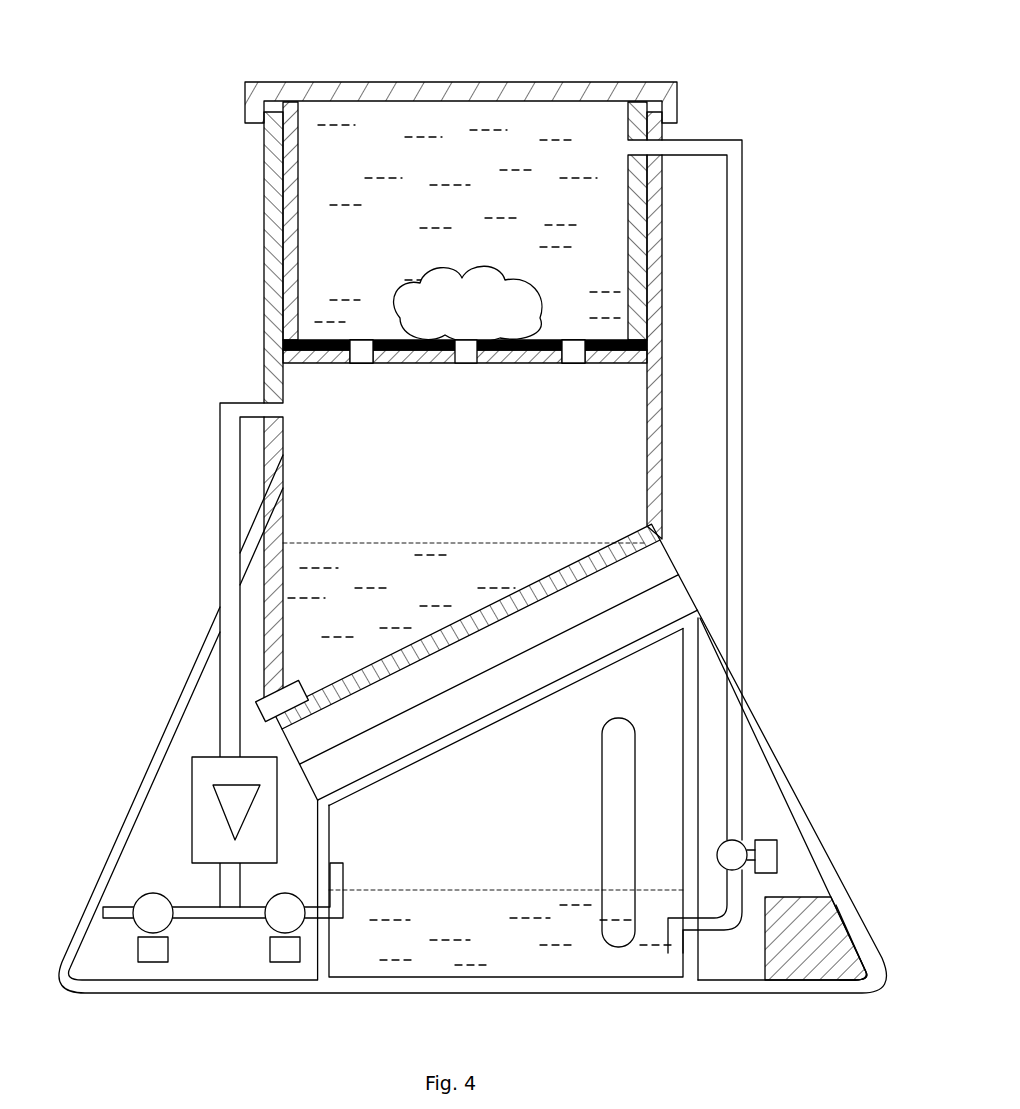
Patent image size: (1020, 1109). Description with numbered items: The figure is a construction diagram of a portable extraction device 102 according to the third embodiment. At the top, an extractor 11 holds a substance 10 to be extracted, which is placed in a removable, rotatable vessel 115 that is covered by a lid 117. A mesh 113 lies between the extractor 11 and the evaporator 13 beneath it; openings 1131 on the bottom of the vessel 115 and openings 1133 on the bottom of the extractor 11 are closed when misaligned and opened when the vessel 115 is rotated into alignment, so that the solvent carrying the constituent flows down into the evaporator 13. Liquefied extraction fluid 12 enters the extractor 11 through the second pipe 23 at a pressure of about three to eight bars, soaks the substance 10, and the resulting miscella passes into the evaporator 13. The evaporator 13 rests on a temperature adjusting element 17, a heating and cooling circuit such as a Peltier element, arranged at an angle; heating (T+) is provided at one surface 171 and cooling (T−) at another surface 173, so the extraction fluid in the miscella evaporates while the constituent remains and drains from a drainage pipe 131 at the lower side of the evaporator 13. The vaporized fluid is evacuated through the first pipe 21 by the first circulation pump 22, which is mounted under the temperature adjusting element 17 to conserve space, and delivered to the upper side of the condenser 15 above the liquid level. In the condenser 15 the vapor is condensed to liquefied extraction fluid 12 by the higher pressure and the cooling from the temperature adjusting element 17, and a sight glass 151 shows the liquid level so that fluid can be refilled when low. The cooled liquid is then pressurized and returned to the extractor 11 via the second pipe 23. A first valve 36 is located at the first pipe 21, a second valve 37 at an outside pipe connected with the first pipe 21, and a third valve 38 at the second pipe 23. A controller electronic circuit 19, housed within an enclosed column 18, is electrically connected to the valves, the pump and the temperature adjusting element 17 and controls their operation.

The portable extraction device 102 is at (843, 69).
The lid 117 is at (472, 90).
The extractor 11 is at (262, 176).
The vessel 115 is at (280, 244).
The substance 10 is at (480, 285).
The mesh 113 is at (322, 339).
The opening 1131 is at (364, 337).
The opening 1133 is at (365, 366).
The evaporator 13 is at (614, 437).
The temperature adjusting element 17 is at (808, 523).
The surface 171 is at (658, 566).
The cold side of thermoelectric module 173 is at (672, 597).
The second pipe 23 is at (733, 440).
The third valve 38 is at (773, 855).
The first pipe 21 is at (222, 535).
The first circulation pump 22 is at (205, 820).
The drainage pipe 131 is at (256, 700).
The liquefied extraction fluid 12 is at (432, 912).
The condenser 15 is at (634, 700).
The sight glass 151 is at (620, 790).
The second valve 37 is at (152, 952).
The first valve 36 is at (287, 952).
The controller electronic circuit 19 is at (820, 955).
The enclosed column 18 is at (840, 912).